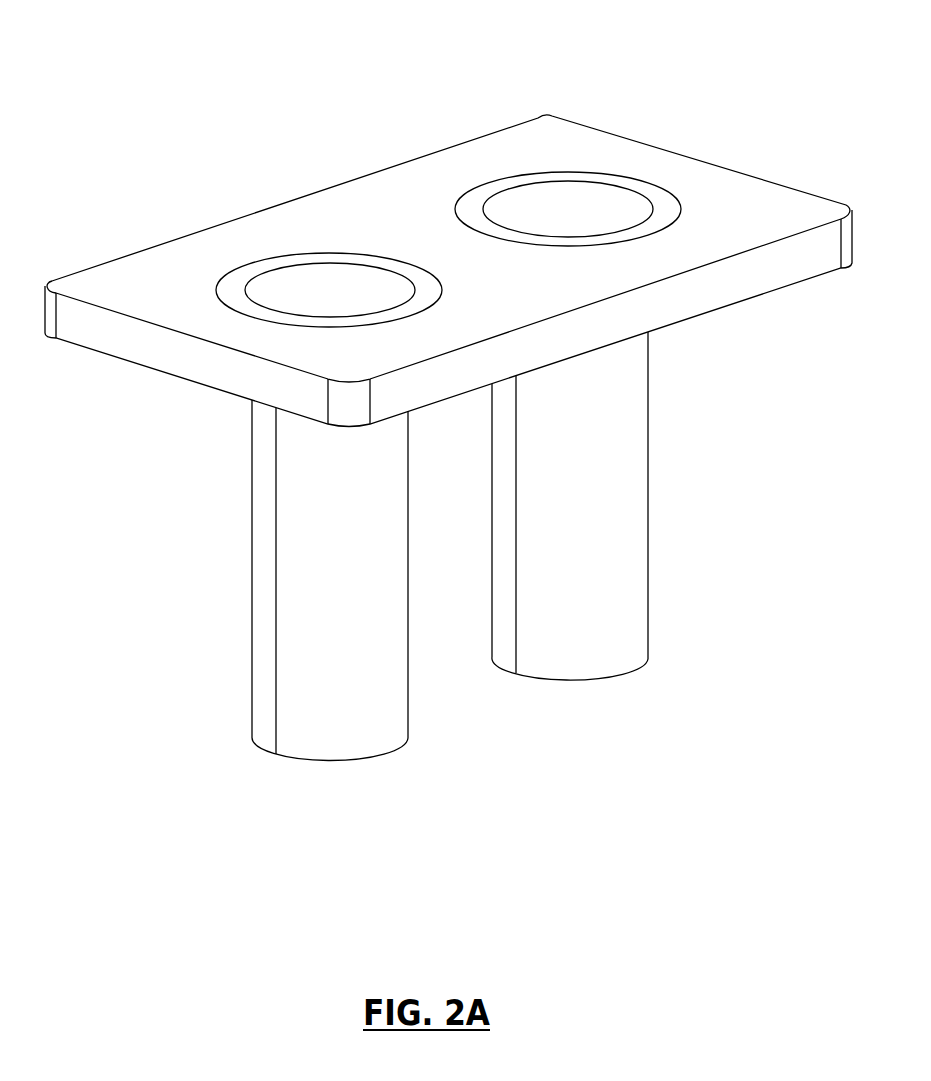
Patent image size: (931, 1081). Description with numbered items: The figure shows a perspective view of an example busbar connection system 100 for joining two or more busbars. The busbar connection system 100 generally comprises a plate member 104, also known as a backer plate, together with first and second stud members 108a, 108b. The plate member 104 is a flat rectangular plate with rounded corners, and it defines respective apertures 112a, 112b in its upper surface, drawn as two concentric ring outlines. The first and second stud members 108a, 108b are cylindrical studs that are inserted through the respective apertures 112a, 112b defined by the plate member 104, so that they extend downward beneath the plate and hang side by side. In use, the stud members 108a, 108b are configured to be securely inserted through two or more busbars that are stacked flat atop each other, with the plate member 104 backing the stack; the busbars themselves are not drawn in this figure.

The busbar connection system 100 is at (193, 53).
The plate member 104 is at (762, 178).
The first stud member 108a is at (387, 753).
The second stud member 108b is at (625, 670).
The first aperture 112a is at (327, 253).
The second aperture 112b is at (563, 172).